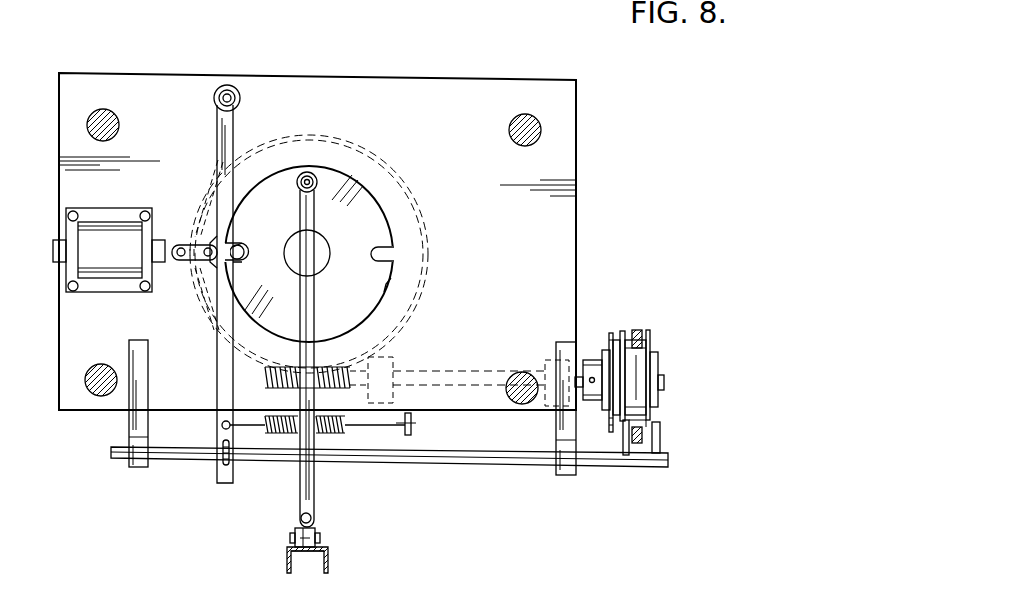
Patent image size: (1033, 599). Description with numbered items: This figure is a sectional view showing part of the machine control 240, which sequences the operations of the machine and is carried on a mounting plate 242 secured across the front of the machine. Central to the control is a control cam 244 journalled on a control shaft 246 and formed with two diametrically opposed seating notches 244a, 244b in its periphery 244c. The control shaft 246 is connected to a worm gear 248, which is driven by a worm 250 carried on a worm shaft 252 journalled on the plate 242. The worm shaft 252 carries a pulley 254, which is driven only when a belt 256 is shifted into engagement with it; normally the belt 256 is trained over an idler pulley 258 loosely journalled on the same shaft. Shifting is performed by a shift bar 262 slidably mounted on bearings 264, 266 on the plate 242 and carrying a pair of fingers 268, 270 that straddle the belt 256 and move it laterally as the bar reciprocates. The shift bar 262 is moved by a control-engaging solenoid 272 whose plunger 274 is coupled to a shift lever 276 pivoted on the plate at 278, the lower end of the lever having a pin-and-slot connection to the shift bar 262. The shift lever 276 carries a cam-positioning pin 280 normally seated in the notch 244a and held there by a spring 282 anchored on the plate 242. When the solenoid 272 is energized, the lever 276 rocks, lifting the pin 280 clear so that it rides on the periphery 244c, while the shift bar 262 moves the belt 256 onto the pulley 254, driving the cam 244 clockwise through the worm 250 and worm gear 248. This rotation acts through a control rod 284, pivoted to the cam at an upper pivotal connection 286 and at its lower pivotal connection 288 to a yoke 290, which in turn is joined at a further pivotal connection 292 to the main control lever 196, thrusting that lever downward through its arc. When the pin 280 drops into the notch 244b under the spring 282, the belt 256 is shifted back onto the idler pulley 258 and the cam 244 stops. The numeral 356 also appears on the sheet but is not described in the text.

The main control lever 196 is at (287, 566).
The machine control 240 is at (609, 152).
The mounting plate 242 is at (503, 84).
The control cam 244 is at (366, 190).
The seating notch 244a is at (232, 243).
The seating notch 244b is at (380, 258).
The periphery 244c is at (388, 292).
The control shaft 246 is at (331, 251).
The worm gear 248 is at (420, 212).
The worm 250 is at (272, 388).
The worm shaft 252 is at (447, 370).
The pulley 254 is at (618, 332).
The belt 256 is at (647, 331).
The idler pulley 258 is at (648, 358).
The shift bar 262 is at (502, 466).
The bearing 264 is at (140, 468).
The bearing 266 is at (563, 478).
The finger 268 is at (624, 460).
The finger 270 is at (662, 447).
The control-engaging solenoid 272 is at (125, 261).
The plunger 274 is at (176, 244).
The shift lever 276 is at (217, 362).
The pivot 278 is at (233, 90).
The cam-positioning pin 280 is at (244, 251).
The spring 282 is at (282, 436).
The control rod 284 is at (318, 322).
The pivotal connection 286 is at (312, 176).
The pivotal connection 288 is at (312, 519).
The yoke 290 is at (305, 560).
The pivotal connection 292 is at (291, 538).
The element 356 is at (636, 594).